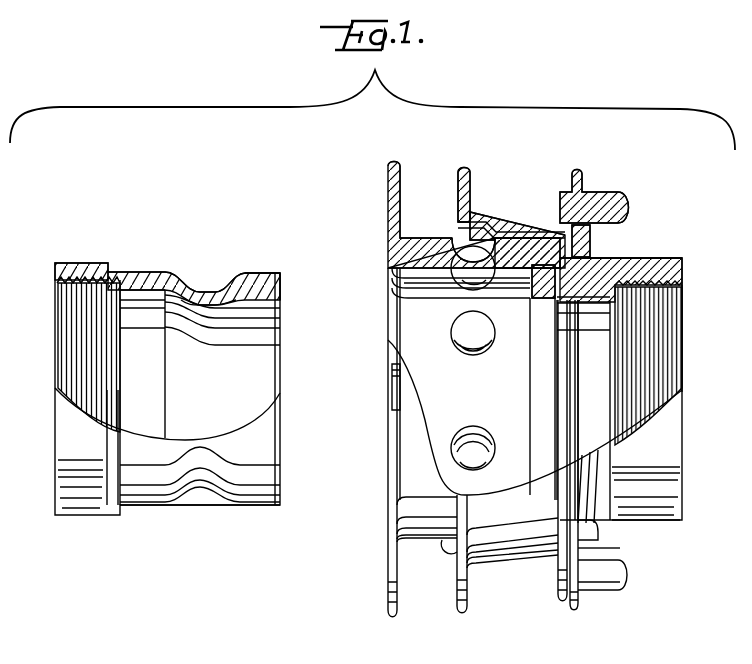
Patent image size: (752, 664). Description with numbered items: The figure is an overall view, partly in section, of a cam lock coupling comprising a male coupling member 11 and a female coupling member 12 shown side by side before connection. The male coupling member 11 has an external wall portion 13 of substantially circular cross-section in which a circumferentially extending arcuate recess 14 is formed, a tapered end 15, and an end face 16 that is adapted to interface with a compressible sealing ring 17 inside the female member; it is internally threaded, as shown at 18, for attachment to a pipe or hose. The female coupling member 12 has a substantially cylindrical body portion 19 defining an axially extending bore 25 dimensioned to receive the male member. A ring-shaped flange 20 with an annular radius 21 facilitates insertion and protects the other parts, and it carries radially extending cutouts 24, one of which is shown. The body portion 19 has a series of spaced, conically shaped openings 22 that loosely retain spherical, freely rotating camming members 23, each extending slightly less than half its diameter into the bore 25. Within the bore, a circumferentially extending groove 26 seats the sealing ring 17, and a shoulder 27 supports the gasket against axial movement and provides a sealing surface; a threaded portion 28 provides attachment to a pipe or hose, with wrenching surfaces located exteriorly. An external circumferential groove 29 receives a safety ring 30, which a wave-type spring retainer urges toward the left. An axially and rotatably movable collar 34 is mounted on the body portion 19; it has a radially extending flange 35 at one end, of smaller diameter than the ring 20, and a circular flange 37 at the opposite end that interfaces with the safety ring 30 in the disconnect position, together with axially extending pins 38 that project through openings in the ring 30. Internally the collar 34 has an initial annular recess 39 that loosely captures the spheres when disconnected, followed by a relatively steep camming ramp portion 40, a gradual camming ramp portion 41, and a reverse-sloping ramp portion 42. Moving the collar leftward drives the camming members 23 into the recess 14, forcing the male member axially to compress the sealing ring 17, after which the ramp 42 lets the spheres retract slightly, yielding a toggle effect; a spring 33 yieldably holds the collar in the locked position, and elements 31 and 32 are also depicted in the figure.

The male coupling member 11 is at (143, 256).
The female coupling member 12 is at (630, 187).
The external wall portion 13 is at (138, 506).
The arcuate recess 14 is at (203, 290).
The tapered end 15 is at (270, 273).
The end face 16 is at (282, 290).
The sealing ring 17 is at (612, 258).
The internal threads 18 is at (62, 306).
The body portion 19 is at (410, 470).
The ring-shaped flange 20 is at (392, 620).
The annular radius 21 is at (393, 258).
The openings 22 is at (452, 258).
The camming members 23 is at (462, 254).
The radially extending cutouts 24 is at (393, 380).
The bore 25 is at (452, 288).
The circumferentially extending groove 26 is at (578, 174).
The shoulder 27 is at (642, 258).
The threaded portion 28 is at (676, 298).
The external circumferential groove 29 is at (595, 232).
The safety ring 30 is at (574, 616).
The contact 31 is at (620, 548).
The contact 32 is at (600, 540).
The spring 33 is at (590, 548).
The collar 34 is at (512, 562).
The radially extending flange 35 is at (461, 616).
The circular flange 37 is at (556, 606).
The axially extending pins 38 is at (600, 592).
The initial annular recess 39 is at (472, 230).
The steep camming ramp portion 40 is at (500, 232).
The gradual camming ramp portion 41 is at (518, 238).
The reverse ramp portion 42 is at (542, 262).